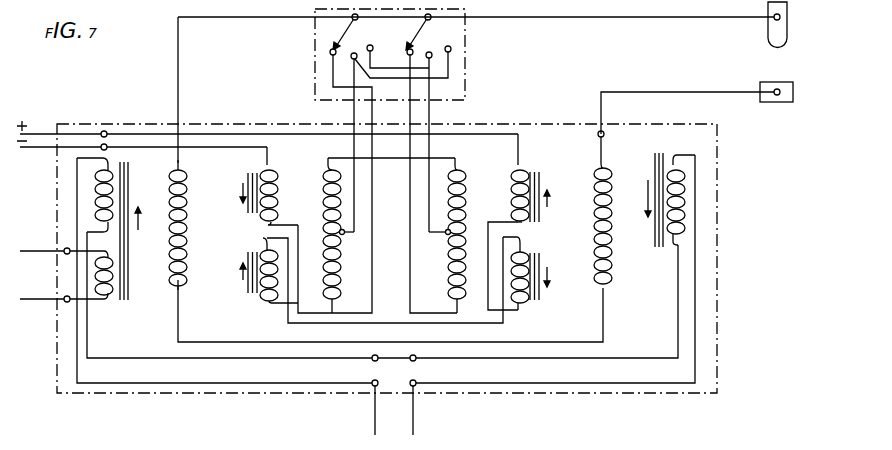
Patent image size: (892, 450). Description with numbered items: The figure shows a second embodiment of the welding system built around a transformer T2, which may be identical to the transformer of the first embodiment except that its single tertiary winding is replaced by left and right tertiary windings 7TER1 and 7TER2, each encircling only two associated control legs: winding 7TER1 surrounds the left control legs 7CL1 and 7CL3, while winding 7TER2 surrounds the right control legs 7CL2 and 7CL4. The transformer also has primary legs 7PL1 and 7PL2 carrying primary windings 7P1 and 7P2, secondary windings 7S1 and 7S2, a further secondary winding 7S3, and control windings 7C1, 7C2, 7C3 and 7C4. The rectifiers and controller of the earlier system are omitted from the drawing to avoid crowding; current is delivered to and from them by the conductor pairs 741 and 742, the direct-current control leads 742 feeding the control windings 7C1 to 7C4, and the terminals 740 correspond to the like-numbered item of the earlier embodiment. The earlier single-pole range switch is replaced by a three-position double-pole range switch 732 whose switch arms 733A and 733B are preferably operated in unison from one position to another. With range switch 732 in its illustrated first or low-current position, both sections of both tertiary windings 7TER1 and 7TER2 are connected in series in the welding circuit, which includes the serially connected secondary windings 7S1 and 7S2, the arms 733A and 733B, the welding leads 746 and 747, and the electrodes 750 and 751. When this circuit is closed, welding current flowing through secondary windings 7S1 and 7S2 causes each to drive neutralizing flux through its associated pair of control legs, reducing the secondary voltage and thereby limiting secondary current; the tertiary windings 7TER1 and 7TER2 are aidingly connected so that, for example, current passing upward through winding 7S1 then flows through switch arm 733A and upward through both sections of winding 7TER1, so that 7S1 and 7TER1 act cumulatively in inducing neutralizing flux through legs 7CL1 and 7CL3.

The direct-current control leads 742 is at (41, 147).
The conductor pair 741 is at (30, 299).
The conductor pair terminals 740 is at (413, 420).
The primary leg 7PL1 is at (123, 160).
The primary winding 7P1 is at (98, 182).
The secondary winding 7S3 is at (109, 290).
The secondary winding 7S1 is at (172, 181).
The secondary winding 7S2 is at (610, 163).
The control leg 7CL1 is at (255, 172).
The control leg 7CL2 is at (538, 173).
The control leg 7CL3 is at (250, 293).
The control leg 7CL4 is at (539, 298).
The control winding 7C1 is at (278, 178).
The control winding 7C2 is at (525, 165).
The control winding 7C3 is at (266, 249).
The control winding 7C4 is at (522, 252).
The left tertiary winding 7TER1 is at (323, 227).
The right tertiary winding 7TER2 is at (452, 268).
The primary leg 7PL2 is at (660, 158).
The primary winding 7P2 is at (682, 183).
The transformer T2 is at (722, 228).
The range switch 732 is at (466, 32).
The switch arm 733A is at (338, 38).
The switch arm 733B is at (409, 38).
The welding lead 746 is at (727, 18).
The welding lead 747 is at (680, 92).
The electrode 750 is at (767, 34).
The electrode 751 is at (773, 102).